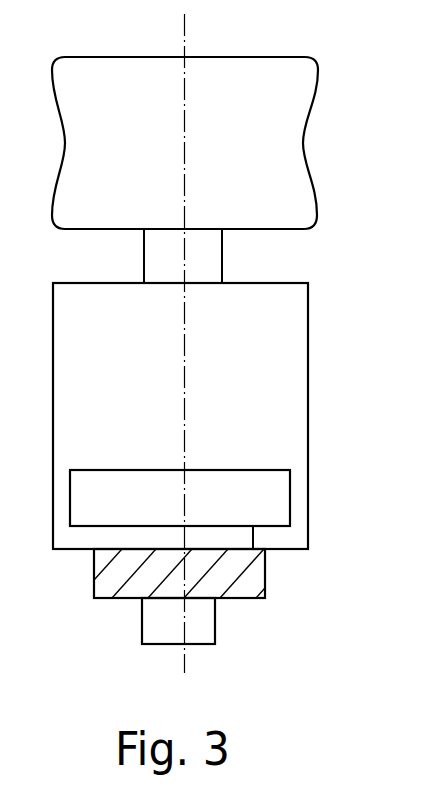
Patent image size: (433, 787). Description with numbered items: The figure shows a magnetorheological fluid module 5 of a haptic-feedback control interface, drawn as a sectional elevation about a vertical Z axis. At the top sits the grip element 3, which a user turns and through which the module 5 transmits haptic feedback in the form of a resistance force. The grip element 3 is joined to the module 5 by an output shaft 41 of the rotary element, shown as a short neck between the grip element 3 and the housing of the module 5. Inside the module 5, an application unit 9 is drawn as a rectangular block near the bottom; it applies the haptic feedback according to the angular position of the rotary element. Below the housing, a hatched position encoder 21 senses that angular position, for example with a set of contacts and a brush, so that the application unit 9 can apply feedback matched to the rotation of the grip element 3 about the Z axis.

The grip element 3 is at (283, 143).
The output shaft 41 is at (210, 260).
The magnetorheological fluid module 5 is at (282, 430).
The application unit 9 is at (243, 502).
The position encoder 21 is at (242, 585).
The Z axis Z is at (178, 660).